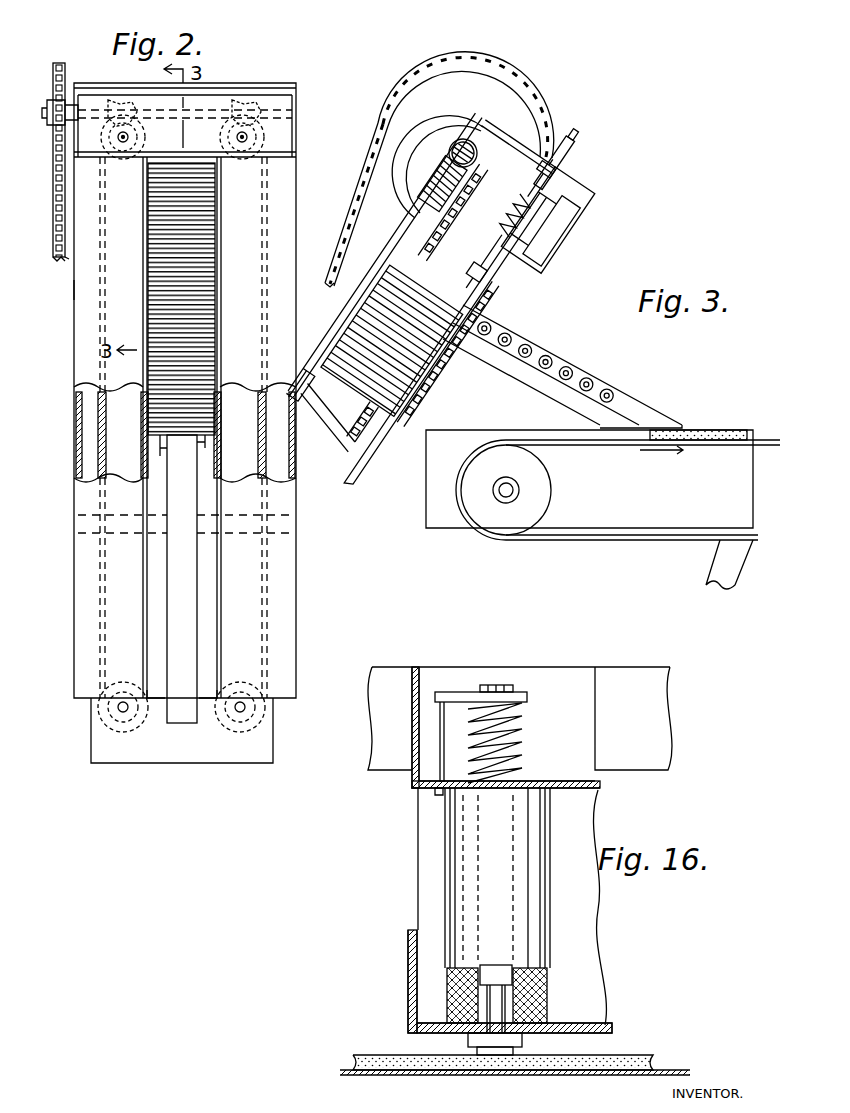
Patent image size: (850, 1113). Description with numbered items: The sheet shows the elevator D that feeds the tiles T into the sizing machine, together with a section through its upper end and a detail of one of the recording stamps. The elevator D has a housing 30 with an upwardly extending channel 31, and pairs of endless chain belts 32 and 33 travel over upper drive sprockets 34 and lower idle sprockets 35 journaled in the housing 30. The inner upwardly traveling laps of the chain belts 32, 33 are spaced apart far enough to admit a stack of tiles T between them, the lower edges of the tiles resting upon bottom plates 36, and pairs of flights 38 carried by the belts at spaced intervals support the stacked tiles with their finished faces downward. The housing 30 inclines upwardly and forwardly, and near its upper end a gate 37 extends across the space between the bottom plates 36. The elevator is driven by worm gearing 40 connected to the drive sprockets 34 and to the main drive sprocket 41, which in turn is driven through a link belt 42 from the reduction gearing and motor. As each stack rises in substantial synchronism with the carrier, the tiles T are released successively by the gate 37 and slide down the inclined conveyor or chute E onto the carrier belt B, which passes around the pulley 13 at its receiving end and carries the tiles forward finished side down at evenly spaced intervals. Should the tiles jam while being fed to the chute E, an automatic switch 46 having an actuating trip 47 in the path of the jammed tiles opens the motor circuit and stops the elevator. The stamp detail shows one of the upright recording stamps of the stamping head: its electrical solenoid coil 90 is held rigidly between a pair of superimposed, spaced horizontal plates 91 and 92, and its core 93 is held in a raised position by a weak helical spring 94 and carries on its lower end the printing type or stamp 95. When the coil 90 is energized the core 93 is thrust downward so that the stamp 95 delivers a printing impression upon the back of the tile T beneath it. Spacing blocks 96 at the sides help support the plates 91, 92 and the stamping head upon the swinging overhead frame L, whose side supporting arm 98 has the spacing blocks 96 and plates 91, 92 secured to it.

In FIG. 3, the pulley 13 is at (506, 522).
In FIG. 2, the housing 30 is at (290, 200).
In FIG. 2, the channel 31 is at (143, 573).
In FIG. 2, the endless chain belt 32 is at (143, 450).
In FIG. 3, the endless chain belt 32 is at (467, 140).
In FIG. 2, the endless chain belt 33 is at (222, 450).
In FIG. 2, the upper drive sprocket 34 is at (97, 133).
In FIG. 3, the upper drive sprocket 34 is at (482, 194).
In FIG. 2, the lower idle sprocket 35 is at (100, 720).
In FIG. 2, the bottom plate 36 is at (160, 606).
In FIG. 3, the bottom plate 36 is at (365, 470).
In FIG. 3, the gate 37 is at (470, 322).
In FIG. 2, the flight 38 is at (205, 448).
In FIG. 3, the flight 38 is at (332, 432).
In FIG. 2, the worm gearing 40 is at (113, 102).
In FIG. 3, the worm gearing 40 is at (440, 172).
In FIG. 2, the main drive sprocket 41 is at (54, 72).
In FIG. 3, the main drive sprocket 41 is at (520, 122).
In FIG. 2, the link belt 42 is at (54, 240).
In FIG. 3, the link belt 42 is at (350, 230).
In FIG. 3, the automatic switch 46 is at (552, 232).
In FIG. 3, the actuating trip 47 is at (480, 278).
In FIG. 16, the electrical solenoid coil 90 is at (540, 880).
In FIG. 16, the upper horizontal plate 91 is at (553, 790).
In FIG. 16, the lower horizontal plate 92 is at (562, 1023).
In FIG. 16, the core 93 is at (516, 978).
In FIG. 16, the helical spring 94 is at (522, 750).
In FIG. 16, the printing type or stamp 95 is at (490, 1038).
In FIG. 16, the spacing block 96 is at (418, 882).
In FIG. 16, the side supporting arm 98 is at (477, 727).
In FIG. 3, the carrier belt B is at (713, 445).
In FIG. 2, the elevator D is at (74, 291).
In FIG. 3, the elevator D is at (318, 372).
In FIG. 3, the inclined conveyor or chute E is at (590, 383).
In FIG. 16, the overhead frame L is at (520, 718).
In FIG. 2, the tile T is at (157, 312).
In FIG. 3, the tile T is at (395, 276).
In FIG. 16, the tile T is at (383, 1058).